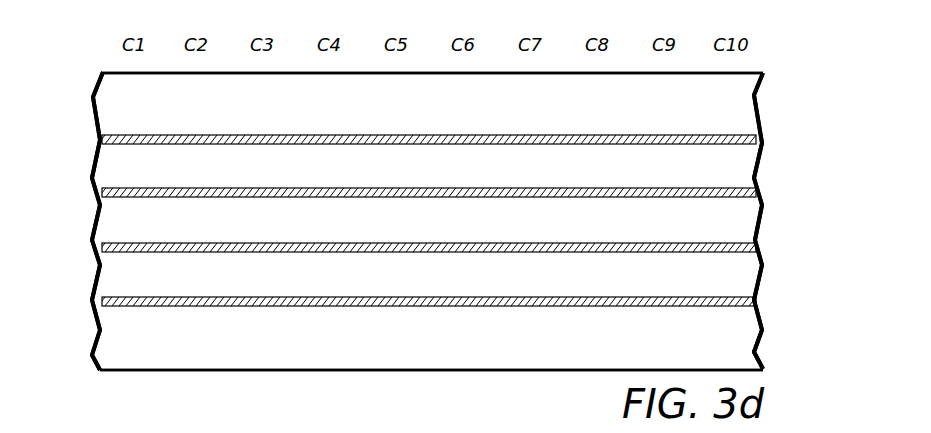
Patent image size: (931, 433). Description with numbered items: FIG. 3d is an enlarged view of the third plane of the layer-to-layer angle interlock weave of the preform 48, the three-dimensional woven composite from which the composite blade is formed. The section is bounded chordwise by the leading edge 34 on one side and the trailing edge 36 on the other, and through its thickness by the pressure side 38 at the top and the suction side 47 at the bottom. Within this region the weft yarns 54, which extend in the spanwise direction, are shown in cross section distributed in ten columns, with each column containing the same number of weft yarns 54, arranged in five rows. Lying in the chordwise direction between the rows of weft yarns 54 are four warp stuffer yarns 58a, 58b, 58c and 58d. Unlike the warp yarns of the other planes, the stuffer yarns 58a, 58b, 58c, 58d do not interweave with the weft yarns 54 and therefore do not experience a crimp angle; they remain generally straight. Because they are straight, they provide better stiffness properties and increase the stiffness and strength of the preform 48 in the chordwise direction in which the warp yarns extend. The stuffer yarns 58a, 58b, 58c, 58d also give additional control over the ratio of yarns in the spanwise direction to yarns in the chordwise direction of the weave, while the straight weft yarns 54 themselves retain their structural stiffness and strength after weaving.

The leading edge 34 is at (757, 96).
The trailing edge 36 is at (95, 121).
The pressure side 38 is at (160, 72).
The suction side 47 is at (448, 370).
The preform 48 is at (256, 380).
The weft yarns 54 is at (430, 220).
The warp stuffer yarn 58a is at (758, 145).
The warp stuffer yarn 58b is at (758, 200).
The warp stuffer yarn 58c is at (758, 252).
The warp stuffer yarn 58d is at (756, 305).